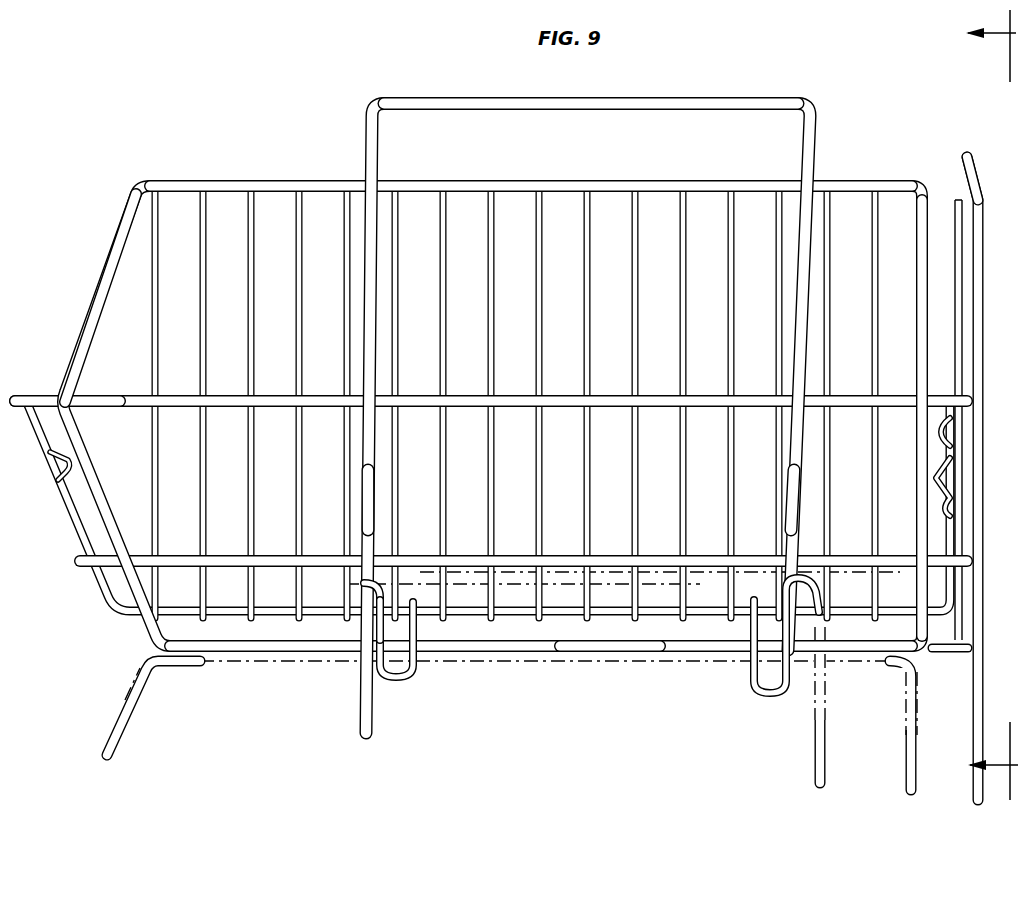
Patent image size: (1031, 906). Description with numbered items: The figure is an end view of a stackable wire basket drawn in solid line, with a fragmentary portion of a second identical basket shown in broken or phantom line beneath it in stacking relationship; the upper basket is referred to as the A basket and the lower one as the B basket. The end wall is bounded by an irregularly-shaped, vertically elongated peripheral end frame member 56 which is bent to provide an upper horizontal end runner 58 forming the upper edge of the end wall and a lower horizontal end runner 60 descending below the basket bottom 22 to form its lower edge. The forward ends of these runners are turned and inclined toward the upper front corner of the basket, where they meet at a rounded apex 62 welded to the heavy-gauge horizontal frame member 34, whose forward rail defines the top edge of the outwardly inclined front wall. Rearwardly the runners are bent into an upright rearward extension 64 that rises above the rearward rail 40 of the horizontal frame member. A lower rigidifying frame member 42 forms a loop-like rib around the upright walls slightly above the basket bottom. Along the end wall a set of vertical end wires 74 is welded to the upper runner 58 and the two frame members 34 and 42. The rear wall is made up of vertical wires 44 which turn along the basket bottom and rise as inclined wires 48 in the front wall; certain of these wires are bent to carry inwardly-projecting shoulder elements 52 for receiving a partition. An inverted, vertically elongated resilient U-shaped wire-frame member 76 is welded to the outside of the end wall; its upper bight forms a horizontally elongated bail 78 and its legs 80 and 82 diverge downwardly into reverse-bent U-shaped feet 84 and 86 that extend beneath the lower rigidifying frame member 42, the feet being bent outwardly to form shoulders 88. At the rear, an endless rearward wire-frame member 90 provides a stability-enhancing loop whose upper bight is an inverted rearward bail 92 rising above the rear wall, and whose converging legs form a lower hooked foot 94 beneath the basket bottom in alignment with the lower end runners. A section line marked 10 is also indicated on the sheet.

The section line 10- 10 is at (971, 405).
The basket bottom 22 is at (508, 616).
The horizontal frame member 34 is at (470, 396).
The rearward rail 40 is at (952, 204).
The lower rigidifying frame member 42 is at (238, 535).
The vertical wires 44 is at (952, 432).
The inclined wires 48 is at (74, 522).
The shoulder element 52 is at (68, 478).
The peripheral end frame member 56 is at (110, 241).
The upper horizontal end runner 58 is at (328, 178).
The lower horizontal end runner 60 is at (607, 630).
The rounded apex 62 is at (55, 399).
The rearward extension 64 is at (930, 343).
The vertical end wires 74 is at (592, 352).
The U-shaped resilient wire-frame member 76 is at (808, 168).
The bail 78 is at (622, 97).
The leg 80 is at (382, 500).
The leg 82 is at (785, 496).
The reverse-bent U-shaped foot 84 is at (410, 682).
The reverse-bent U-shaped foot 86 is at (752, 690).
The outwardly-extending shoulders 88 is at (372, 625).
The rearward wire-frame member 90 is at (985, 240).
The rearward bail 92 is at (1000, 160).
The hooked foot 94 is at (950, 654).
The A basket A is at (152, 180).
The B basket B is at (110, 745).